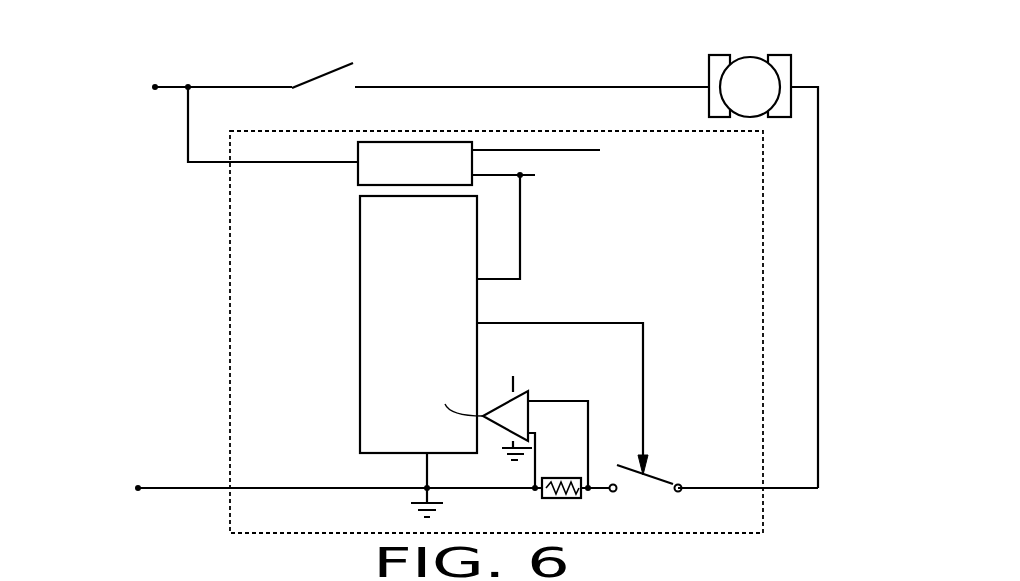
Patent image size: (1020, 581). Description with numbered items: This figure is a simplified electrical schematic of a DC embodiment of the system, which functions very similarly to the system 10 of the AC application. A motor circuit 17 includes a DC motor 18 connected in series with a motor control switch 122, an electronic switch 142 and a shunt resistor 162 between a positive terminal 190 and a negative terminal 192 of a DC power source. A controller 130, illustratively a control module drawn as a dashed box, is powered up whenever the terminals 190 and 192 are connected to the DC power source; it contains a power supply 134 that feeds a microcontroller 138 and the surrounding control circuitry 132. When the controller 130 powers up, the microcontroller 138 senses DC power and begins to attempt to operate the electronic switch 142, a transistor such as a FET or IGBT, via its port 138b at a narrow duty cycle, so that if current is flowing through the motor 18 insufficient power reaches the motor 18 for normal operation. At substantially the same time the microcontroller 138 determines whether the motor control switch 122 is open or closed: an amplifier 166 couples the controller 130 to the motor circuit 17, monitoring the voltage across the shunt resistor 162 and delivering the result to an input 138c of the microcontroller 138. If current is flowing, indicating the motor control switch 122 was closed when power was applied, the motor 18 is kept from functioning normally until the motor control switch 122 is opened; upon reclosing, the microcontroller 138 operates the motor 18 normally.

The system 10 is at (468, 75).
The motor circuit 17 is at (830, 115).
The DC motor 18 is at (745, 55).
The motor control switch 122 is at (340, 64).
The controller 130 is at (230, 350).
The control circuit 132 is at (566, 237).
The power supply 134 is at (358, 180).
The microcontroller 138 is at (360, 407).
The port 138b is at (477, 323).
The microcontroller input 138c is at (451, 398).
The electronic switch 142 is at (653, 475).
The shunt resistor 162 is at (558, 478).
The amplifier 166 is at (526, 392).
The positive terminal 190 is at (155, 90).
The negative terminal 192 is at (140, 486).